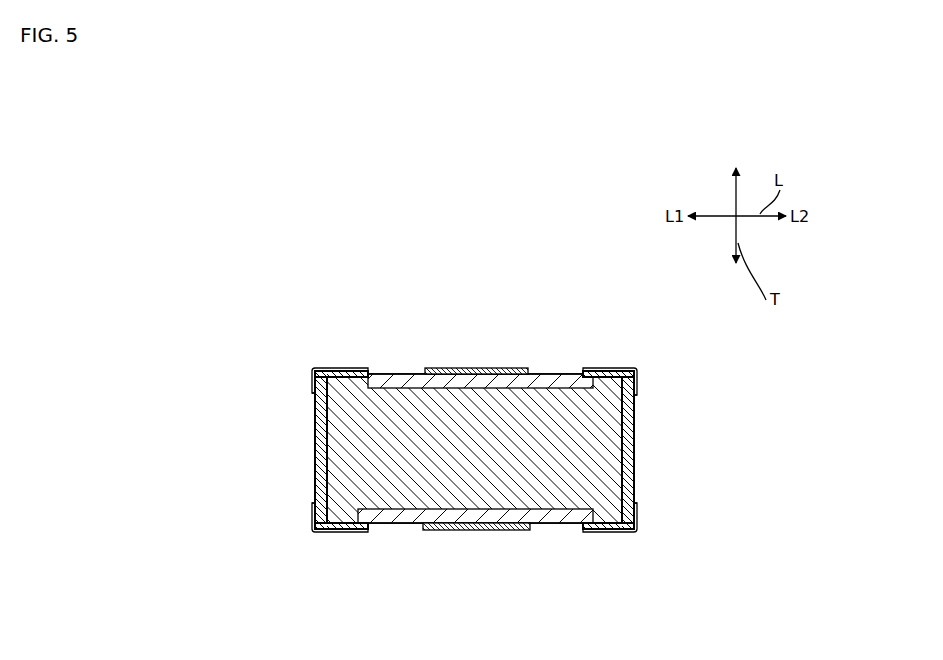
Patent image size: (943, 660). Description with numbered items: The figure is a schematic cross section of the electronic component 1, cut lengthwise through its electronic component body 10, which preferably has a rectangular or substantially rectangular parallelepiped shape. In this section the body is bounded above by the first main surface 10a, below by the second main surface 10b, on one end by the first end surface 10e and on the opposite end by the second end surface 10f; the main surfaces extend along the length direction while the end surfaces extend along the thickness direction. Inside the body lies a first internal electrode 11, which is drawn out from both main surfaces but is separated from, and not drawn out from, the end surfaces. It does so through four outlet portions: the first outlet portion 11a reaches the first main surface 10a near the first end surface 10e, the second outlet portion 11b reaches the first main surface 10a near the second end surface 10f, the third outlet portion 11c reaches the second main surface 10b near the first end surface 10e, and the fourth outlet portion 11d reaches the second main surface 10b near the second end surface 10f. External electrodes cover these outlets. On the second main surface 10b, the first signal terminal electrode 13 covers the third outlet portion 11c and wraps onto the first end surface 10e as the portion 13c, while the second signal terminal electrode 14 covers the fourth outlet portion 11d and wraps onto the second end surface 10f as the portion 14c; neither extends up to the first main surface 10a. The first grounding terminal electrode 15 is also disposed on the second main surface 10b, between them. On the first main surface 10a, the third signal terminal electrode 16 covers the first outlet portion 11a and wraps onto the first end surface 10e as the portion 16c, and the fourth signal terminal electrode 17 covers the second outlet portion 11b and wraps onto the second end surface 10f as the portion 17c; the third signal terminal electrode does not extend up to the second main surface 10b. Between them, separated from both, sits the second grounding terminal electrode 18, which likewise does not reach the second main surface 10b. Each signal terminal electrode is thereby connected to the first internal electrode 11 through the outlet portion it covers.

The electronic component 1 is at (556, 351).
The electronic component body 10 is at (378, 370).
The first main surface 10a is at (402, 373).
The second main surface 10b is at (410, 524).
The first end surface 10e is at (322, 441).
The second end surface 10f is at (636, 438).
The first internal electrode 11 is at (558, 524).
The first outlet portion 11a is at (344, 371).
The second outlet portion 11b is at (598, 371).
The third outlet portion 11c is at (354, 530).
The fourth outlet portion 11d is at (610, 531).
The first signal terminal electrode 13 is at (342, 535).
The portion of the first signal terminal electrode disposed on the first end surface 13c is at (311, 517).
The second signal terminal electrode 14 is at (643, 530).
The portion of the second signal terminal electrode disposed on the second end surfa 14c is at (640, 512).
The first grounding terminal electrode 15 is at (484, 533).
The third signal terminal electrode 16 is at (324, 367).
The portion of the third signal terminal electrode disposed on the first end surface 16c is at (311, 378).
The fourth signal terminal electrode 17 is at (630, 367).
The portion of the fourth signal terminal electrode disposed on the second end surfa 17c is at (639, 394).
The second grounding terminal electrode 18 is at (476, 366).